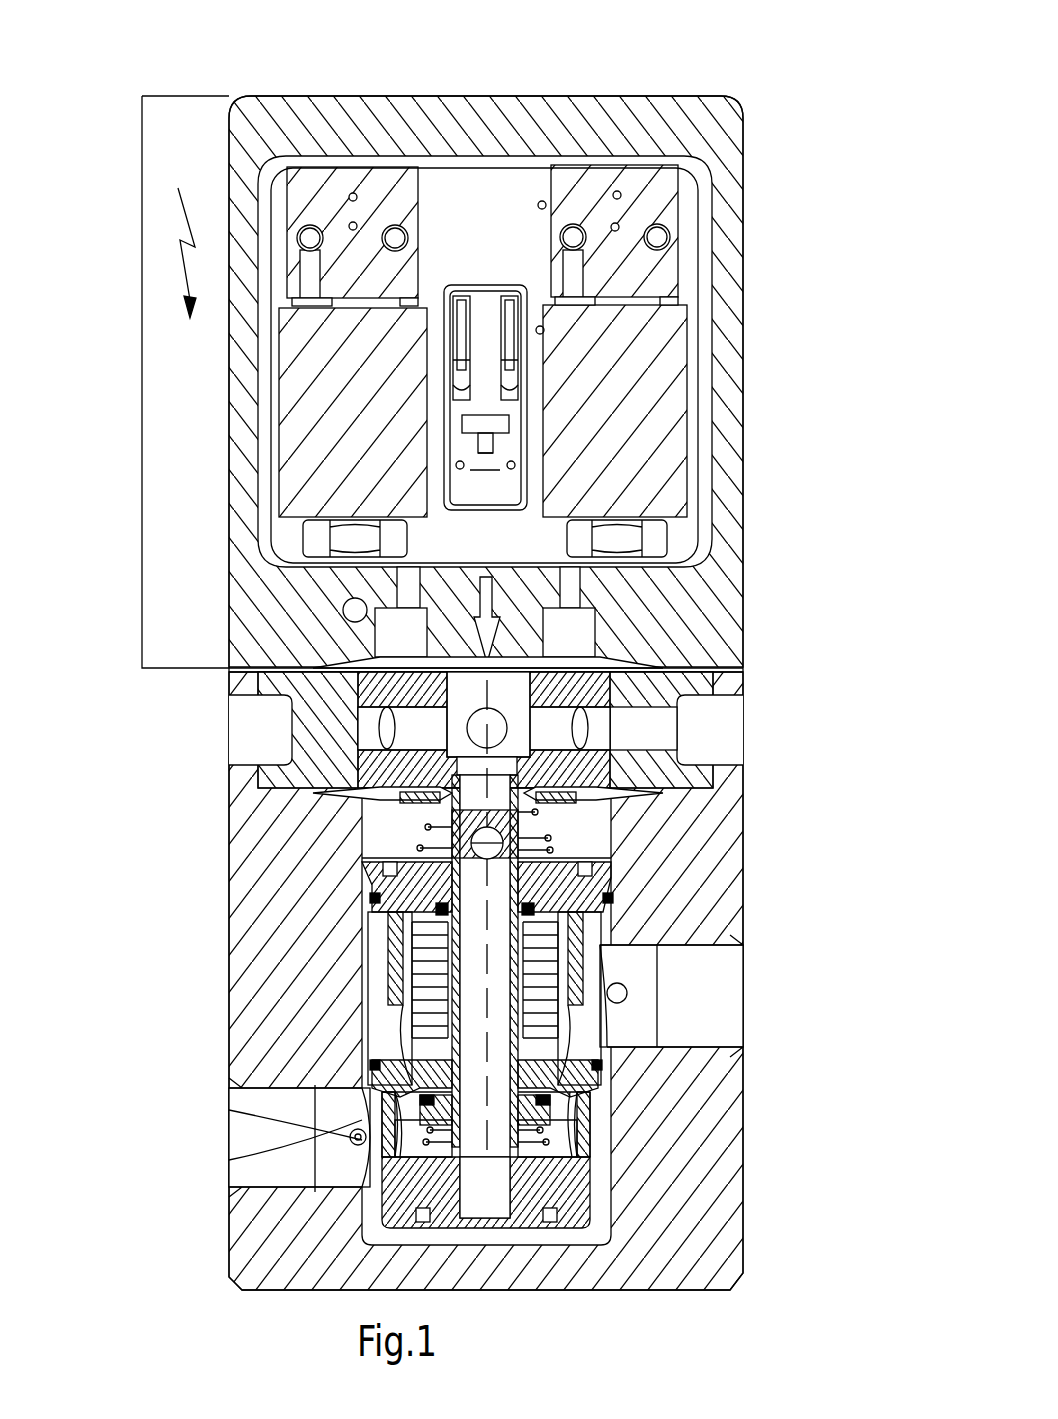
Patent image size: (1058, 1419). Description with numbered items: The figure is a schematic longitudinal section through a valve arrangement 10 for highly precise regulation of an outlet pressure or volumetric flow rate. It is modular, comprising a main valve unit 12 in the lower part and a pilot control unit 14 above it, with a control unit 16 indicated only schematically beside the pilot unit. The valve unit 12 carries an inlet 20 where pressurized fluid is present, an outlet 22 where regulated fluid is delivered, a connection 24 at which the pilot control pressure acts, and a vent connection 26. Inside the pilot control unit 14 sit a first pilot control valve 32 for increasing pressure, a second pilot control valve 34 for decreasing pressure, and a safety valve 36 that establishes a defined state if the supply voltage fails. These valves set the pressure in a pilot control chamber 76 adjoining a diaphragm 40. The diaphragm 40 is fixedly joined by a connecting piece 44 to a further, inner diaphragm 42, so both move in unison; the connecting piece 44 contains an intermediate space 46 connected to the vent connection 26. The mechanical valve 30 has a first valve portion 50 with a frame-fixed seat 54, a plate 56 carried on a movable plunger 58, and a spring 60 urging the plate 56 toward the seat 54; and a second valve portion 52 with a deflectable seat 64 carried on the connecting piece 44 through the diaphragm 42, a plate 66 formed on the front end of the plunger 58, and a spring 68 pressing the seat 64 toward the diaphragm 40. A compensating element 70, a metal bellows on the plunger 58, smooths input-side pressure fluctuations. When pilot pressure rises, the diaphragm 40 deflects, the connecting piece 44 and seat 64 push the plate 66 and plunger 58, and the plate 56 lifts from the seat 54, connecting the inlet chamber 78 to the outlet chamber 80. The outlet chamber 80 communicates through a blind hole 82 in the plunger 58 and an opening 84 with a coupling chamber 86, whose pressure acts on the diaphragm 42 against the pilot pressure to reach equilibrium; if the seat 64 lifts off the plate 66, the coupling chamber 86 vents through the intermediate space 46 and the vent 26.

The valve arrangement 10 is at (770, 102).
The valve unit 12 is at (843, 676).
The pilot control unit 14 is at (843, 97).
The control unit 16 is at (114, 97).
The inlet 20 is at (770, 990).
The outlet 22 is at (160, 1140).
The connection for the pilot control 24 is at (505, 610).
The vent connection 26 is at (275, 745).
The valve 30 is at (418, 1142).
The first pilot control valve 32 is at (345, 410).
The second pilot control valve 34 is at (645, 405).
The safety valve 36 is at (495, 316).
The diaphragm 40 is at (653, 667).
The further diaphragm 42 is at (397, 802).
The connecting piece 44 is at (640, 690).
The intermediate space 46 is at (522, 703).
The first valve portion 50 is at (552, 1112).
The second valve portion 52 is at (447, 830).
The seat 54 is at (385, 1112).
The plate 56 is at (590, 1087).
The plunger 58 is at (425, 1052).
The spring 60 is at (548, 1140).
The seat 64 is at (565, 805).
The plate 66 is at (400, 880).
The spring 68 is at (450, 838).
The compensating element 70 is at (578, 1022).
The pilot control chamber 76 is at (385, 650).
The inlet chamber 78 is at (430, 1058).
The outlet chamber 80 is at (425, 1125).
The blind hole 82 is at (495, 955).
The opening 84 is at (490, 845).
The coupling chamber 86 is at (540, 826).